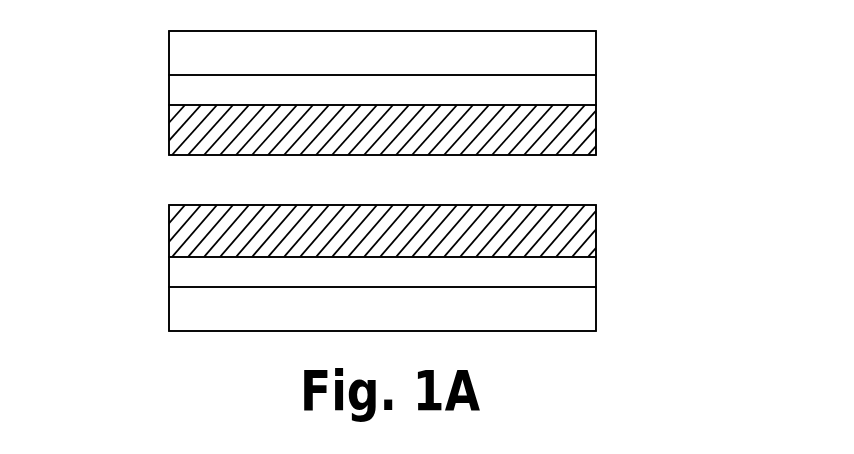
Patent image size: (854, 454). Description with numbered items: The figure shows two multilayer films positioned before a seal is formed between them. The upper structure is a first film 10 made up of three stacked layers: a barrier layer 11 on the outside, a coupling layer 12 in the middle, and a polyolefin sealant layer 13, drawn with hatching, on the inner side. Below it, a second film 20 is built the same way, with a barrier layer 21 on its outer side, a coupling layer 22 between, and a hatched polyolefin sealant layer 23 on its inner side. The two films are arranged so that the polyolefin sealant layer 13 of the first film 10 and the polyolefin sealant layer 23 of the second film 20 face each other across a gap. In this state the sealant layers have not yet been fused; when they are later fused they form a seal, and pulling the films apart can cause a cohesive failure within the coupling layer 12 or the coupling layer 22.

The first film 10 is at (133, 67).
The barrier layer 11 is at (596, 52).
The coupling layer 12 is at (596, 88).
The polyolefin sealant layer 13 is at (596, 123).
The second film 20 is at (133, 231).
The barrier layer 21 is at (596, 303).
The coupling layer 22 is at (596, 266).
The polyolefin sealant layer 23 is at (596, 224).